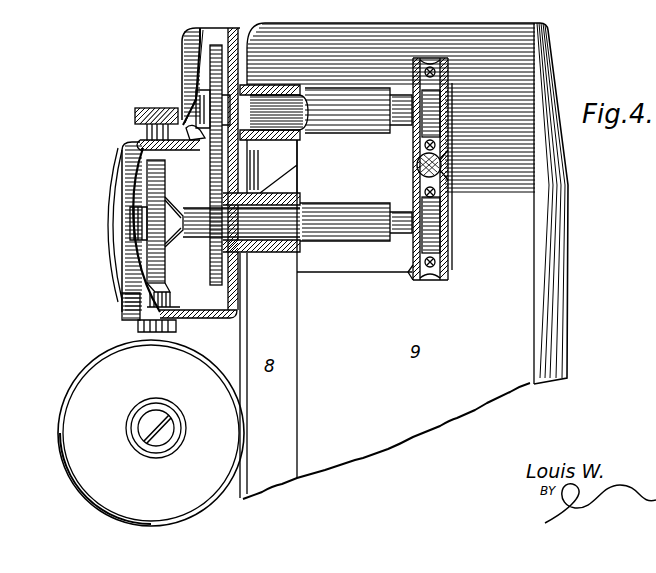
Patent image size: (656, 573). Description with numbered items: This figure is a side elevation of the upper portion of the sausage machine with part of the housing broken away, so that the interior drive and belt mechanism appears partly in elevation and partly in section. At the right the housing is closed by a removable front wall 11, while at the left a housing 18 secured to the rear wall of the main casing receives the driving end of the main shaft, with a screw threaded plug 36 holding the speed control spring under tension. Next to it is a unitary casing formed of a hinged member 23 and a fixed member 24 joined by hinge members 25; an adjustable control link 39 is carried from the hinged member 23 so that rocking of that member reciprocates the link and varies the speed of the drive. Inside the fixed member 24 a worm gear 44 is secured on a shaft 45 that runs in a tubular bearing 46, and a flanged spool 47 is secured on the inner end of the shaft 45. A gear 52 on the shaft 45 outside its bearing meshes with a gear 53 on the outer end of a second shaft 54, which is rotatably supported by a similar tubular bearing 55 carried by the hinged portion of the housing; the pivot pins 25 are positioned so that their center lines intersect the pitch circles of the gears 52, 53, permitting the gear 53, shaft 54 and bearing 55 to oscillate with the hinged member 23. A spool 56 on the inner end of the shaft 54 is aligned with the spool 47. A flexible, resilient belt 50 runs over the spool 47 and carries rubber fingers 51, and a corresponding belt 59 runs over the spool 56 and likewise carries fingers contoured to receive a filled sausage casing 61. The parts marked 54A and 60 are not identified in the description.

The front wall 11 is at (556, 296).
The housing 18 is at (78, 398).
The hinged member 23 is at (200, 28).
The fixed member 24 is at (125, 313).
The hinge members 25 is at (212, 168).
The screw threaded plug 36 is at (158, 446).
The adjustable control link 39 is at (150, 128).
The worm gear 44 is at (143, 188).
The shaft 45 is at (299, 214).
The tubular bearing 46 is at (373, 210).
The flanged spool 47 is at (432, 220).
The belt 50 is at (428, 278).
The fingers 51 is at (415, 277).
The gear 52 is at (216, 265).
The gear 53 is at (215, 68).
The shaft 54 is at (273, 108).
The flange 54A is at (253, 122).
The tubular bearing 55 is at (340, 131).
The spool 56 is at (432, 110).
The belt 59 is at (430, 67).
The bracket plate 60 is at (449, 156).
The filled sausage casing 61 is at (417, 165).